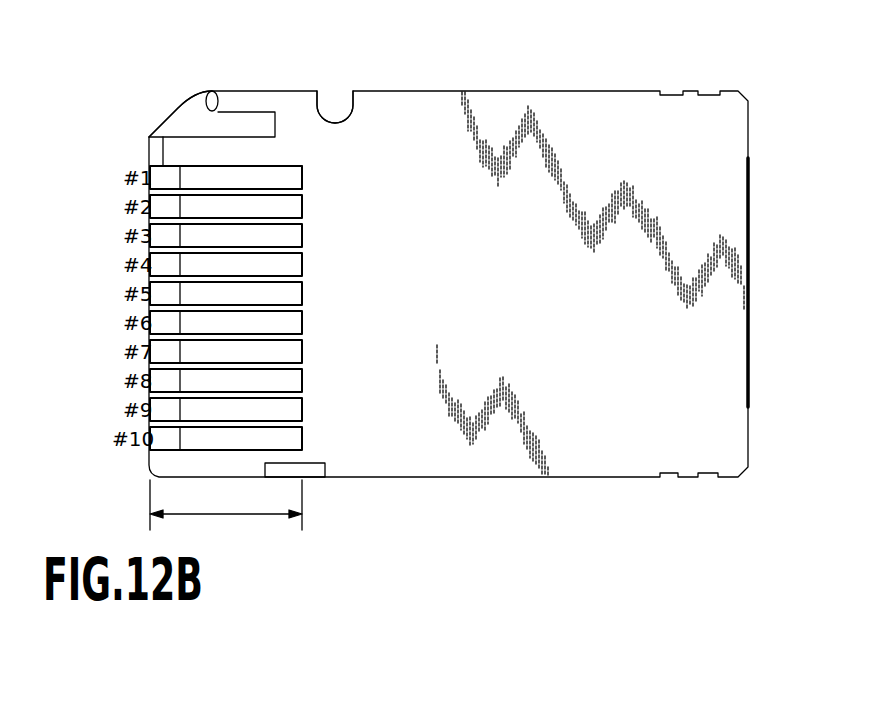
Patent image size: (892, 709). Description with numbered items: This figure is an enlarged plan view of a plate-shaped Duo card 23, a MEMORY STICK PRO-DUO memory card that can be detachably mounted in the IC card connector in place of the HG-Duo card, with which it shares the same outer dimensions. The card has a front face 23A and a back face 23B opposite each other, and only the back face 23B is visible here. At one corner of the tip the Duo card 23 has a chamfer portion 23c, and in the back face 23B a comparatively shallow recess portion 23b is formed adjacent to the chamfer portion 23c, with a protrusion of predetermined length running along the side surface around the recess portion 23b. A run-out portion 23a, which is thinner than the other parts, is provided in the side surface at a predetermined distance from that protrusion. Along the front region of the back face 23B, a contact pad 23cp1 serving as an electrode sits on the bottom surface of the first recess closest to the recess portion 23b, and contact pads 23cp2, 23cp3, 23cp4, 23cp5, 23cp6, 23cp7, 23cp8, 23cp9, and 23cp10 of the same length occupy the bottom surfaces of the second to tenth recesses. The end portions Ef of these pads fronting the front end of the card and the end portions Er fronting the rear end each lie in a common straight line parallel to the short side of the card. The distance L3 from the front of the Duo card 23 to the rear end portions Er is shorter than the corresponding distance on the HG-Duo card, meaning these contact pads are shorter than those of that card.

The Duo card 23 is at (433, 523).
The run-out portion 23a is at (348, 99).
The recess portion 23b is at (262, 114).
The chamfer portion 23c is at (178, 106).
The end portions of the contact pads fronting the front end Ef is at (183, 173).
The end portions of the contact pads fronting the rear end Er is at (298, 168).
The contact pad 23cp1 is at (292, 183).
The contact pad 23cp2 is at (295, 208).
The contact pad 23cp3 is at (290, 237).
The contact pad 23cp4 is at (290, 266).
The contact pad 23cp5 is at (292, 295).
The contact pad 23cp6 is at (292, 324).
The contact pad 23cp7 is at (290, 353).
The contact pad 23cp8 is at (293, 382).
The contact pad 23cp9 is at (290, 411).
The contact pad 23cp10 is at (290, 438).
The back face 23B is at (730, 268).
The front face 23A is at (492, 410).
The distance from front face to rear end portions of contact pads L3 is at (226, 505).